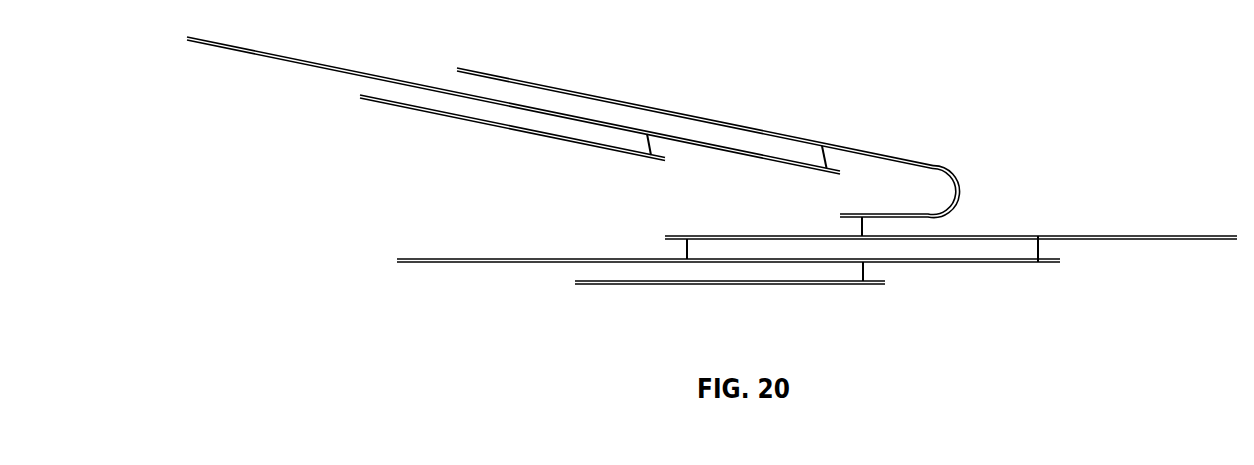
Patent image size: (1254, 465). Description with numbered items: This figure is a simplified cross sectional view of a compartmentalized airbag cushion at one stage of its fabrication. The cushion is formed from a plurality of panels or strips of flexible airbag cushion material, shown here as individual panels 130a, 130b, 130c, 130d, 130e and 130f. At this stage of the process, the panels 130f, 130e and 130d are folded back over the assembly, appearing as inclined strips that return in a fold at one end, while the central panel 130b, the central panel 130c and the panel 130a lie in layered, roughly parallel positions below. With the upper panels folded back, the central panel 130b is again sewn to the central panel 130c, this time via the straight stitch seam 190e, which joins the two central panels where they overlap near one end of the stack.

The panel 130a is at (678, 285).
The central panel 130b is at (988, 263).
The central panel 130c is at (1168, 236).
The panel 130d is at (497, 75).
The panel 130e is at (230, 50).
The panel 130f is at (423, 110).
The straight stitch seam 190e is at (1040, 248).